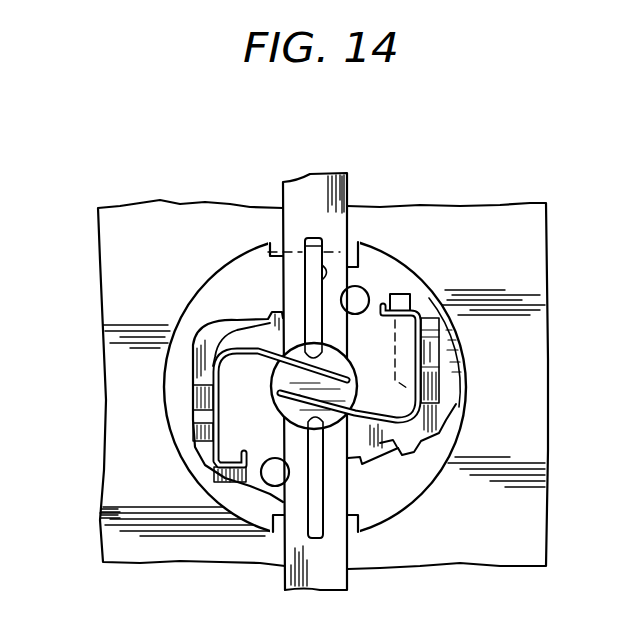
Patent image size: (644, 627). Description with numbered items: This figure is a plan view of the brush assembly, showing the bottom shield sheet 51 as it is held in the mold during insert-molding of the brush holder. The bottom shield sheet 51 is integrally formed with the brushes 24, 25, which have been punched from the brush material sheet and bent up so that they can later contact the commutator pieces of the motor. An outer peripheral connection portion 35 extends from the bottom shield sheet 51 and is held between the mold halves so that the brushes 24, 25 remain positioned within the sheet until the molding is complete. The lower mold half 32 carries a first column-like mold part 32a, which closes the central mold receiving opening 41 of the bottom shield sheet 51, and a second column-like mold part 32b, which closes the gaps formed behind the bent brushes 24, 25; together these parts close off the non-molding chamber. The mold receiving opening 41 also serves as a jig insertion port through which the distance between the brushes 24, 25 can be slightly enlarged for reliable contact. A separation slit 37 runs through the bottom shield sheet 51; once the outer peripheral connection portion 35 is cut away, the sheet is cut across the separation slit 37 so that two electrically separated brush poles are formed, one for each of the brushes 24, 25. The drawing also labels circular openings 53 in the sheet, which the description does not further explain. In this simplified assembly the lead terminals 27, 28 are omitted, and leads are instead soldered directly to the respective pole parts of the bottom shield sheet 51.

The brush 24 is at (333, 372).
The brush 25 is at (305, 412).
The lead terminal 27 is at (187, 318).
The lead terminal 28 is at (376, 455).
The lower mold half 32 is at (527, 278).
The first column-like mold part 32a is at (422, 410).
The second column-like mold part 32b is at (205, 446).
The outer peripheral connection portion 35 is at (318, 195).
The separation slit 37 is at (316, 270).
The mold receiving opening 41 is at (268, 316).
The bottom shield sheet 51 is at (420, 427).
The holes 53 is at (366, 291).